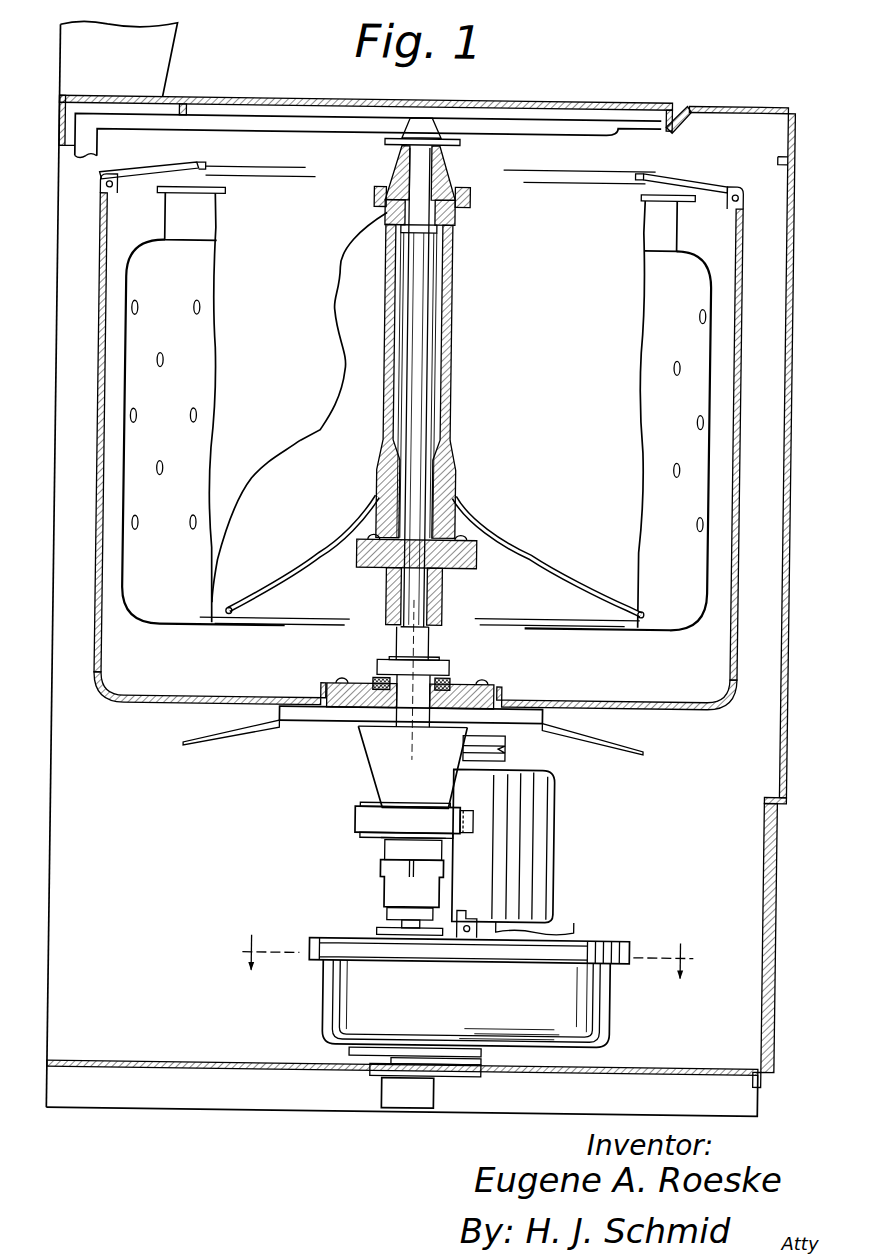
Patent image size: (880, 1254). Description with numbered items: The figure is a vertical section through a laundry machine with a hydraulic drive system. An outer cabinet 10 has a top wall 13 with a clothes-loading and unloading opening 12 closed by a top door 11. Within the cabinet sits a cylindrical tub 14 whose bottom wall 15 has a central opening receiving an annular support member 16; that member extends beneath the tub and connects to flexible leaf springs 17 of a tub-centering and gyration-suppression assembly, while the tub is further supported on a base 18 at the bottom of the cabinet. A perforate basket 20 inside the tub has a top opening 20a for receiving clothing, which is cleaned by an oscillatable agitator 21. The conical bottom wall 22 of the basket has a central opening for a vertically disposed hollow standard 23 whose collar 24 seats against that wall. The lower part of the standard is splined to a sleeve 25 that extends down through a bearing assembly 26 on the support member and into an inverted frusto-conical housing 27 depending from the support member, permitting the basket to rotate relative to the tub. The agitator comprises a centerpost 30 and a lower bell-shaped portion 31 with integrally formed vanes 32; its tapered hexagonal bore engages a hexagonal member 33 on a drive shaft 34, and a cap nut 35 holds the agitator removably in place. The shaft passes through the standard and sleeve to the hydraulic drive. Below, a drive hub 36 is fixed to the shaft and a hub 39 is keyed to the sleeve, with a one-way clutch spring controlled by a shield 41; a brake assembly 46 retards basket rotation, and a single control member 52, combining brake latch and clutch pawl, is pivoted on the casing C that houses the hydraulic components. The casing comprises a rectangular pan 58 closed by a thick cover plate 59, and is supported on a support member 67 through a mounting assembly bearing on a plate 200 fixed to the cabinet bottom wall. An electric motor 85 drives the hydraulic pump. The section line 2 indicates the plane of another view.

The outer cabinet 10 is at (790, 360).
The top door 11 is at (553, 100).
The clothes-loading and unloading opening 12 is at (610, 128).
The top wall 13 is at (727, 103).
The cylindrical tub 14 is at (93, 469).
The bottom wall 15 is at (138, 708).
The annular support member 16 is at (282, 718).
The flexible leaf springs 17 is at (190, 750).
The base 18 is at (139, 1064).
The perforate clothes container or basket 20 is at (118, 279).
The top opening 20a is at (194, 174).
The oscillatable agitator 21 is at (331, 303).
The conical bottom wall 22 is at (286, 603).
The hollow standard 23 is at (452, 598).
The collar 24 is at (377, 565).
The sleeve 25 is at (398, 645).
The bearing assembly 26 is at (451, 668).
The housing 27 is at (362, 749).
The centerpost 30 is at (448, 403).
The lower bell-shaped portion 31 is at (541, 572).
The vanes 32 is at (301, 441).
The hexagonal member 33 is at (449, 162).
The drive shaft 34 is at (417, 314).
The cap nut 35 is at (381, 142).
The drive hub 36 is at (391, 915).
The hub 39 is at (387, 851).
The shield 41 is at (387, 889).
The brake assembly 46 is at (354, 824).
The control member 52 is at (471, 911).
The housing or pan 58 is at (346, 1049).
The cover plate 59 is at (323, 960).
The support member 67 is at (492, 1059).
The electric motor 85 is at (557, 817).
The plate 200 is at (357, 1080).
The casing C is at (618, 937).
The section line 2- 2 is at (465, 956).